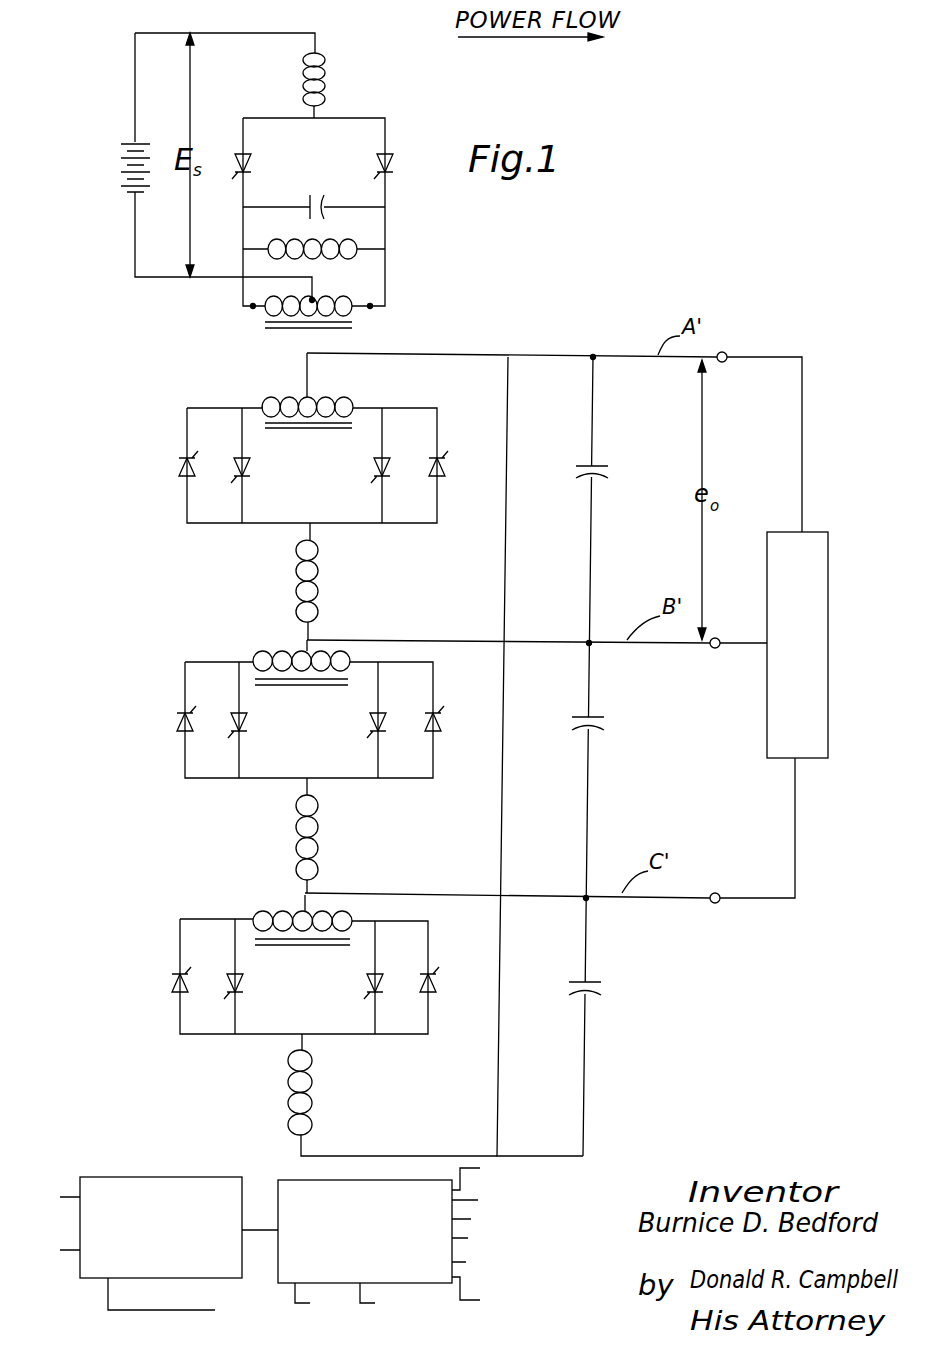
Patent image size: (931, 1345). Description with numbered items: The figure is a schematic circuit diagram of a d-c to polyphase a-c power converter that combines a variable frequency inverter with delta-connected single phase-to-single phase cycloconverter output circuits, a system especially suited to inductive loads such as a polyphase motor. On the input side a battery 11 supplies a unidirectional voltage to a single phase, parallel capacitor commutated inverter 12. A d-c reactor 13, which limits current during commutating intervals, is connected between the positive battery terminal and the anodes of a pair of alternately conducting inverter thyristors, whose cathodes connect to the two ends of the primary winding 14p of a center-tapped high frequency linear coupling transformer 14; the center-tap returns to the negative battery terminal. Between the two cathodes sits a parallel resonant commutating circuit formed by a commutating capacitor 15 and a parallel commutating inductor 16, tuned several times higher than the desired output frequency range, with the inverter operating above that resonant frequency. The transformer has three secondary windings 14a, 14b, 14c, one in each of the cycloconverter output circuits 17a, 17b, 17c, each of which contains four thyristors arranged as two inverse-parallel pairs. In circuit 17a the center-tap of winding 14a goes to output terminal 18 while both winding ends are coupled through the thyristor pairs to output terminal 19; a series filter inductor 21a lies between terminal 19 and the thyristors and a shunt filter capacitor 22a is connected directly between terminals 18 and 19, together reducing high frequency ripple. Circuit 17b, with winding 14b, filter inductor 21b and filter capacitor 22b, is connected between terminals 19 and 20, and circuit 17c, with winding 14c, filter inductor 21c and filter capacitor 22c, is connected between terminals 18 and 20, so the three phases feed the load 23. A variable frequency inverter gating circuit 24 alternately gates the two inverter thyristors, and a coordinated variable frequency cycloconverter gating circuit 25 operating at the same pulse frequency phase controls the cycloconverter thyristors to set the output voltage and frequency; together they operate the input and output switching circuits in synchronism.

The battery 11 is at (119, 174).
The inverter 12 is at (340, 114).
The d-c reactor 13 is at (321, 90).
The coupling transformer 14 is at (310, 311).
The primary winding 14p is at (262, 313).
The secondary winding 14a is at (284, 401).
The secondary winding 14b is at (297, 652).
The secondary winding 14c is at (292, 899).
The commutating capacitor 15 is at (300, 205).
The commutating inductor 16 is at (318, 246).
The cycloconverter output circuit 17a is at (285, 438).
The cycloconverter output circuit 17b is at (283, 690).
The cycloconverter output circuit 17c is at (281, 949).
The output terminal 18 is at (724, 352).
The output terminal 19 is at (716, 649).
The output terminal 20 is at (717, 904).
The filter inductor 21a is at (318, 591).
The filter inductor 21b is at (320, 845).
The filter inductor 21c is at (315, 1105).
The filter capacitor 22a is at (596, 466).
The filter capacitor 22b is at (592, 716).
The filter capacitor 22c is at (588, 982).
The load 23 is at (815, 592).
The inverter gating circuit 24 is at (118, 1177).
The cycloconverter gating circuit 25 is at (278, 1218).